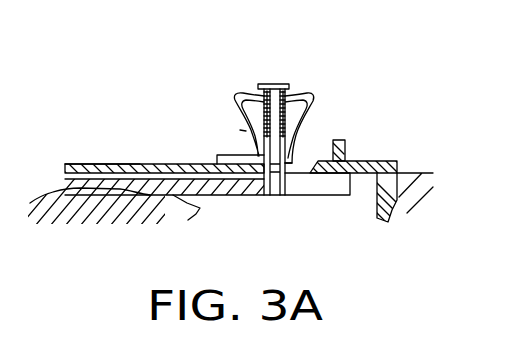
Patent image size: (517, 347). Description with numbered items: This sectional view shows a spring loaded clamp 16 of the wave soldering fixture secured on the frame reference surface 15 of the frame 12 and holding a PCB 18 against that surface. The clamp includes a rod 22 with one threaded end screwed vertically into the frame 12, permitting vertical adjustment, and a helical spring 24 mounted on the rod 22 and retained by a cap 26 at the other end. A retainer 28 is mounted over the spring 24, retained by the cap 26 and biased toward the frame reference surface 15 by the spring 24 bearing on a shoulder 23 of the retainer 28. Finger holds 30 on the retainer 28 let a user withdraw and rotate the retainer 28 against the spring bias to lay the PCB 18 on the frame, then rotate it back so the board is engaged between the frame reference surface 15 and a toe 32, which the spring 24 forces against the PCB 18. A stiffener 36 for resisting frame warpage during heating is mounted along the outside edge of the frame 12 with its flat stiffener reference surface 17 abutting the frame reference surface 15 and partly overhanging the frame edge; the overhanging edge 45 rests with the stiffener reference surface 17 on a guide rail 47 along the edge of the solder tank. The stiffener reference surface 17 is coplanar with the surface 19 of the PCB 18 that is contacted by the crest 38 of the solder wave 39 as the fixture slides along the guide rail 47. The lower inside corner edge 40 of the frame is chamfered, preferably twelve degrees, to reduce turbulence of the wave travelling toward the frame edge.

The frame 12 is at (228, 184).
The frame reference surface 15 is at (284, 182).
The spring loaded clamp 16 is at (318, 85).
The stiffener reference surface 17 is at (366, 161).
The PCB 18 is at (137, 164).
The surface of the PCB 19 is at (83, 164).
The rod 22 is at (272, 118).
The shoulder 23 is at (244, 131).
The helical spring 24 is at (305, 115).
The cap 26 is at (268, 83).
The retainer 28 is at (291, 147).
The finger holds 30 is at (244, 93).
The toe 32 is at (220, 155).
The stiffener 36 is at (345, 143).
The crest 38 is at (78, 191).
The solder wave 39 is at (55, 262).
The lower inside corner edge 40 is at (184, 206).
The overhanging edge 45 is at (397, 162).
The guide rail 47 is at (392, 202).